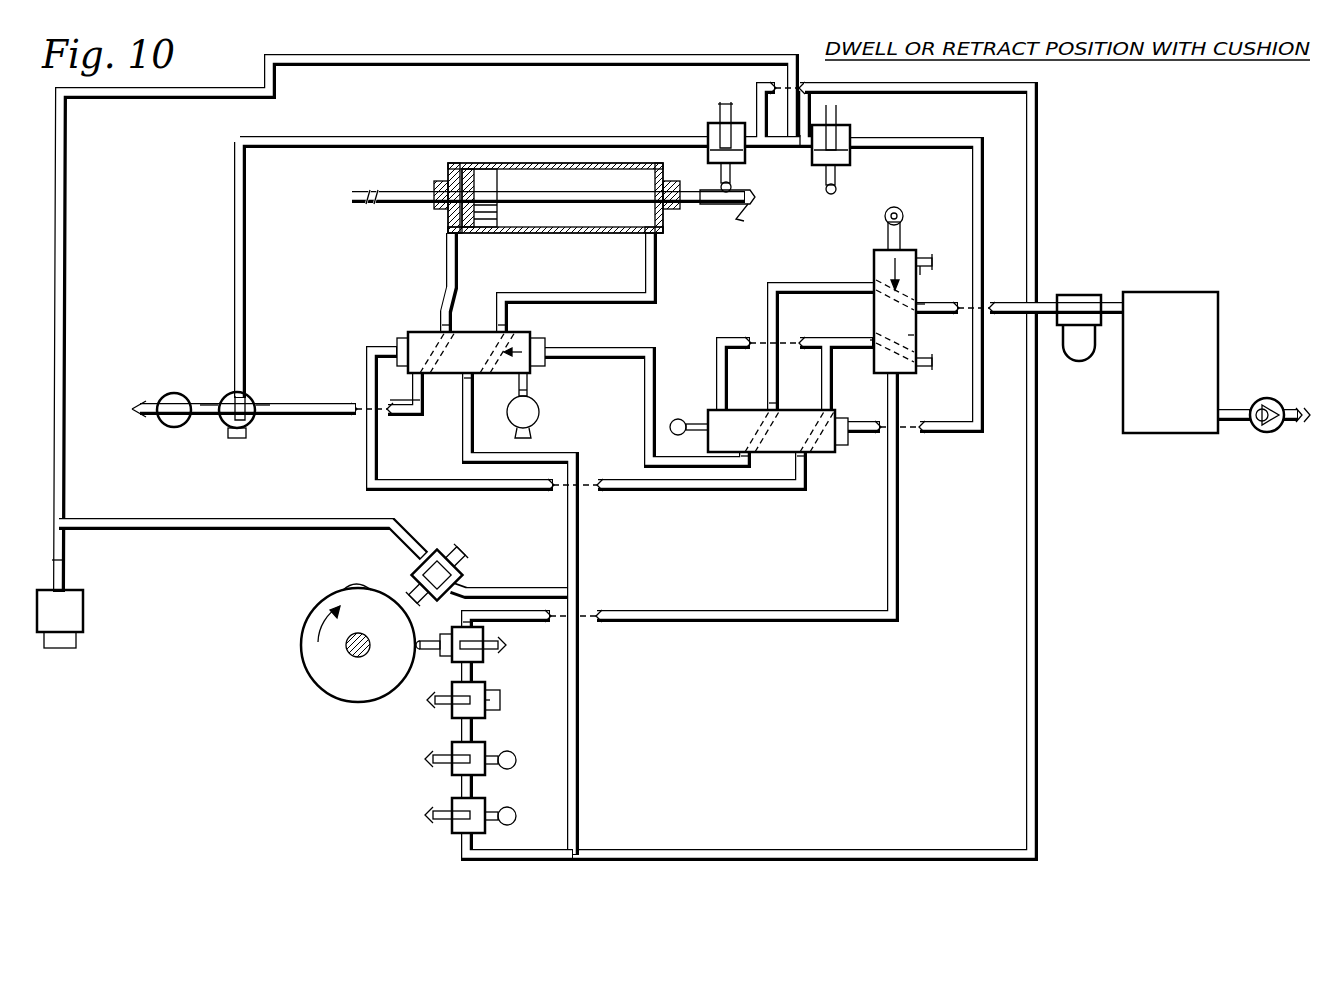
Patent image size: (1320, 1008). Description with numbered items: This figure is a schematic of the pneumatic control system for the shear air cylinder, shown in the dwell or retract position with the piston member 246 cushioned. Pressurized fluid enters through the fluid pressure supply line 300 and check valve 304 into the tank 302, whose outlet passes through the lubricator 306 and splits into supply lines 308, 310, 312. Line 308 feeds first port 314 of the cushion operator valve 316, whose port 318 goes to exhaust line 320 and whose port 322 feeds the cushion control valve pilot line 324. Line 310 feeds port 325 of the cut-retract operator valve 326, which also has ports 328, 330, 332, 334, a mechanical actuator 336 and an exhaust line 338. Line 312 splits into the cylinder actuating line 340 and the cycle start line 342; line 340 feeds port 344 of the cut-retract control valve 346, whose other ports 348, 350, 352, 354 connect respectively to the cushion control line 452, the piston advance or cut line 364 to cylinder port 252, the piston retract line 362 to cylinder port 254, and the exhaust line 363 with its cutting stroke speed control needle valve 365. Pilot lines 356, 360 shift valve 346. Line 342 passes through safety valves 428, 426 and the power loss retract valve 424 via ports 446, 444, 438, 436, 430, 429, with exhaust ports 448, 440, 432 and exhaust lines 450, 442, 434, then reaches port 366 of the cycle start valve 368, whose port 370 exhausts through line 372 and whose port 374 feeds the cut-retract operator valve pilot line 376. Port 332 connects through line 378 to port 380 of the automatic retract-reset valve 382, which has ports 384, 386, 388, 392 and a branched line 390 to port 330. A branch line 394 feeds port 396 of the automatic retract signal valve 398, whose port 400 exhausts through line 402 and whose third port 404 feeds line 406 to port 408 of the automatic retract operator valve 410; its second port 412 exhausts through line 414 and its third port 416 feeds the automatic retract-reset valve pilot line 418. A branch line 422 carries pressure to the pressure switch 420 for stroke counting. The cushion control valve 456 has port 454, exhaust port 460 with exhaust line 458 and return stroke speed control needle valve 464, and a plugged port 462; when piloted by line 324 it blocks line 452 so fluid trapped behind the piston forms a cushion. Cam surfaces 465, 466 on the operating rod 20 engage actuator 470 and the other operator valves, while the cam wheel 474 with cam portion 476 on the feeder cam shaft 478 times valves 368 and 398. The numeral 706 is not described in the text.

The operating rod 20 is at (546, 190).
The piston member 246 is at (470, 180).
The cylinder port 252 is at (455, 232).
The cylinder port 254 is at (655, 240).
The fluid pressure supply line 300 is at (1293, 420).
The tank 302 is at (1188, 366).
The check valve 304 is at (1268, 432).
The lubricator 306 is at (1085, 305).
The supply line 308 is at (1038, 93).
The supply line 310 is at (1010, 314).
The supply line 312 is at (1038, 498).
The first port 314 is at (766, 150).
The cushion operator valve 316 is at (712, 140).
The port 318 is at (728, 135).
The exhaust line 320 is at (708, 125).
The port 322 is at (708, 152).
The cushion control valve pilot line 324 is at (512, 112).
The port 325 is at (925, 312).
The cut-retract operator valve 326 is at (912, 338).
The port 328 is at (928, 368).
The port 330 is at (870, 345).
The port 332 is at (874, 285).
The port 334 is at (928, 270).
The mechanical actuator 336 is at (898, 222).
The exhaust line 338 is at (930, 258).
The cylinder actuating line 340 is at (577, 745).
The cycle start line 342 is at (505, 854).
The port 344 is at (470, 395).
The cut-retract control valve 346 is at (520, 342).
The port 348 is at (420, 395).
The port 350 is at (440, 335).
The port 352 is at (488, 335).
The port 354 is at (527, 382).
The pilot line 356 is at (598, 350).
The pilot line 360 is at (368, 380).
The piston retract line 362 is at (592, 300).
The exhaust line 363 is at (530, 395).
The piston advance or cut line 364 is at (448, 283).
The cutting stroke speed control needle valve 365 is at (540, 412).
The port 366 is at (473, 672).
The cycle start valve 368 is at (478, 635).
The port 370 is at (452, 652).
The exhaust line 372 is at (500, 647).
The port 374 is at (462, 620).
The cut-retract operator valve pilot line 376 is at (899, 505).
The line 378 is at (767, 300).
The port 380 is at (771, 405).
The automatic retract-reset valve 382 is at (771, 431).
The port 384 is at (748, 460).
The port 386 is at (832, 408).
The port 388 is at (718, 408).
The branched line 390 is at (717, 350).
The port 392 is at (803, 460).
The branch line 394 is at (571, 592).
The port 396 is at (465, 590).
The automatic retract signal valve 398 is at (440, 563).
The port 400 is at (415, 580).
The exhaust line 402 is at (462, 556).
The third port 404 is at (415, 548).
The line 406 is at (577, 57).
The port 408 is at (802, 150).
The automatic retract operator valve 410 is at (842, 157).
The second port 412 is at (845, 132).
The exhaust line 414 is at (836, 112).
The third port 416 is at (850, 150).
The automatic retract-reset valve pilot line 418 is at (945, 140).
The pressure switch 420 is at (80, 605).
The branch line 422 is at (66, 560).
The power loss retract valve 424 is at (500, 707).
The safety valve 426 is at (485, 748).
The safety valve 428 is at (485, 805).
The port 429 is at (475, 690).
The port 430 is at (445, 735).
The port 432 is at (450, 712).
The exhaust line 434 is at (450, 700).
The downstream port 436 is at (450, 755).
The port 438 is at (490, 758).
The port 440 is at (452, 795).
The exhaust line 442 is at (450, 768).
The downstream port 444 is at (440, 812).
The port 446 is at (462, 850).
The port 448 is at (490, 815).
The exhaust line 450 is at (440, 820).
The cushion control line 452 is at (395, 416).
The port 454 is at (255, 413).
The cushion control valve 456 is at (245, 398).
The exhaust line 458 is at (138, 404).
The port 460 is at (208, 413).
The plugged port 462 is at (237, 438).
The return stroke speed control needle valve 464 is at (178, 393).
The cam surface 465 is at (752, 203).
The cam surface 466 is at (737, 221).
The actuator 470 is at (722, 182).
The cam wheel 474 is at (310, 625).
The cam portion 476 is at (355, 587).
The feeder cam shaft 478 is at (348, 645).
The line 706 is at (64, 248).